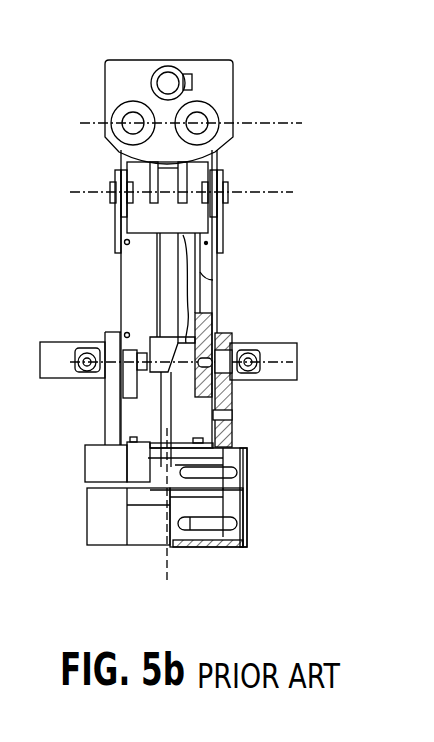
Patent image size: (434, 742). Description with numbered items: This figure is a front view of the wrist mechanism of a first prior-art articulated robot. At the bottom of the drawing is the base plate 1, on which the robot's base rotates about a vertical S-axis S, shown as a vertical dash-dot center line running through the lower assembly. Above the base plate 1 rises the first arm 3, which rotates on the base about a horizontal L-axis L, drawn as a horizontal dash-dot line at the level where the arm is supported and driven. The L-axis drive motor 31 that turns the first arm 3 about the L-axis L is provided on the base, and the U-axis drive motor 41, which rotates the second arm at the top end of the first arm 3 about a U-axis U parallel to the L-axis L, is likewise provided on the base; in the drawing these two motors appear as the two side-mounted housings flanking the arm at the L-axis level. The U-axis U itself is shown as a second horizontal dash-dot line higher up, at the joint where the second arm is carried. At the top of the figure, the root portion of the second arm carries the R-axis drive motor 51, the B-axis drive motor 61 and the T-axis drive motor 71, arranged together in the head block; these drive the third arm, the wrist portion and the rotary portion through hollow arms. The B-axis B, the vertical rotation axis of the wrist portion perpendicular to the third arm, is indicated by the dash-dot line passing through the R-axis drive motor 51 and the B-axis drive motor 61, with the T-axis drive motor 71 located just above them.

The base plate 1 is at (250, 538).
The first arm 3 is at (217, 282).
The L-axis drive motor 31 is at (283, 348).
The U-axis drive motor 41 is at (63, 353).
The R-axis drive motor 51 is at (215, 113).
The B-axis drive motor 61 is at (113, 110).
The T-axis drive motor 71 is at (172, 67).
The B-axis B is at (270, 127).
The U-axis U is at (258, 195).
The L-axis L is at (277, 364).
The S-axis S is at (163, 562).